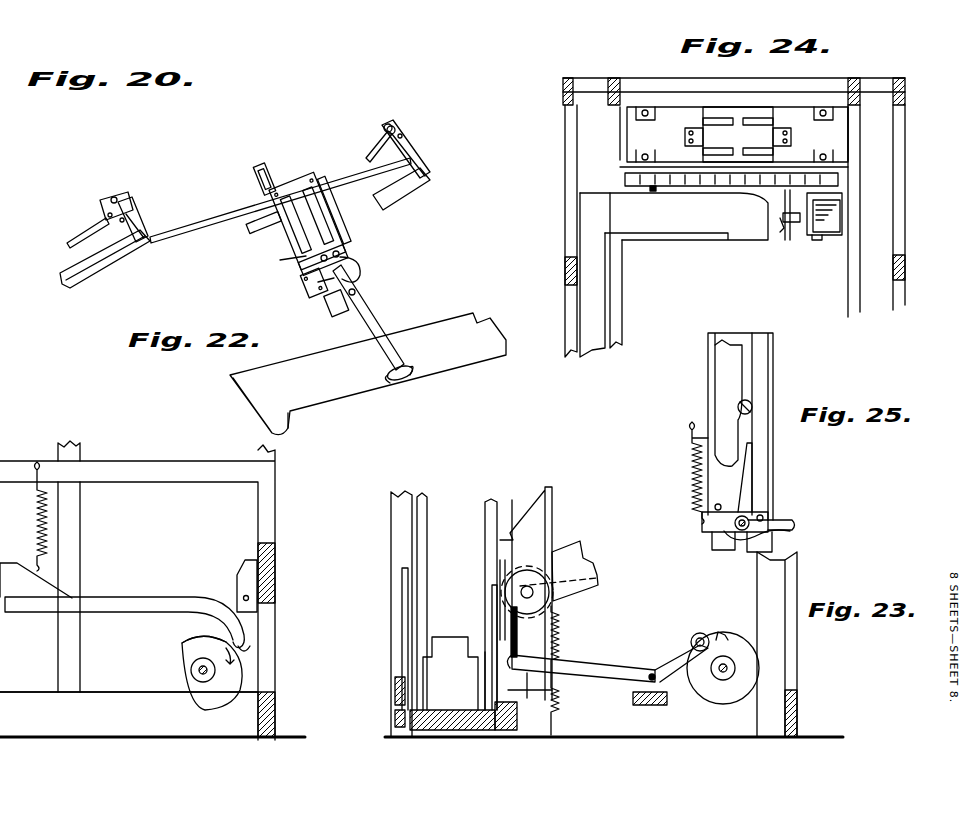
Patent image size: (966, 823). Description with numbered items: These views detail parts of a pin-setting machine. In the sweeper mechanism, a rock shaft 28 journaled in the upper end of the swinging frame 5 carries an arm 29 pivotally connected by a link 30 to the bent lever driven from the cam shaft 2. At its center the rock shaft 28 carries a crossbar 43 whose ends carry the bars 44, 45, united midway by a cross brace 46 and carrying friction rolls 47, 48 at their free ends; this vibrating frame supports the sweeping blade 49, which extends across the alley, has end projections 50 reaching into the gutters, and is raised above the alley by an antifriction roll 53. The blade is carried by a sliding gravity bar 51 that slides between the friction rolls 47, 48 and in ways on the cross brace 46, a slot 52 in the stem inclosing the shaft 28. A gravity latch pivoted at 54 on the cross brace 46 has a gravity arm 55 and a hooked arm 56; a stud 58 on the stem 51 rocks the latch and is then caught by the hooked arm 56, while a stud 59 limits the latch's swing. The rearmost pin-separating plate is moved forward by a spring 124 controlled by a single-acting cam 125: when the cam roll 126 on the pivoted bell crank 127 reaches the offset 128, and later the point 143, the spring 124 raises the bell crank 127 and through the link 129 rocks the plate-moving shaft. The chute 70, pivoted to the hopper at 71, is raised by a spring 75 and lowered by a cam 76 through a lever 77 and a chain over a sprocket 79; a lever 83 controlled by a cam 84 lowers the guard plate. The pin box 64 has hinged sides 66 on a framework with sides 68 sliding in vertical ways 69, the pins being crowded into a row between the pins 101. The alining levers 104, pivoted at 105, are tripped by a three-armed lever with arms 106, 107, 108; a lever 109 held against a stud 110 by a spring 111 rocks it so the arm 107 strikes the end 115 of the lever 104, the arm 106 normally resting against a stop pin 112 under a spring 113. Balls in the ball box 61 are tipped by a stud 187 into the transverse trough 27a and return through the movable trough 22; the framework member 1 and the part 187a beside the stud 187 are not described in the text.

In FIG. 22, the frame 1 is at (131, 470).
In FIG. 25, the frame 1 is at (708, 391).
In FIG. 22, the cam shaft 2 is at (196, 673).
In FIG. 20, the frame 5 is at (90, 278).
In FIG. 24, the movable trough 22 is at (600, 325).
In FIG. 24, the transverse trough 27a is at (750, 236).
In FIG. 20, the rock shaft 28 is at (195, 220).
In FIG. 20, the arm 29 is at (134, 214).
In FIG. 20, the link 30 is at (77, 238).
In FIG. 20, the crossbar 43 is at (293, 187).
In FIG. 20, the bar 44 is at (328, 210).
In FIG. 20, the bar 45 is at (268, 248).
In FIG. 20, the cross brace 46 is at (297, 272).
In FIG. 20, the friction roll 47 is at (362, 275).
In FIG. 20, the friction roll 48 is at (322, 298).
In FIG. 20, the sweeping blade 49 is at (328, 362).
In FIG. 20, the projections 50 is at (296, 425).
In FIG. 20, the sliding gravity bar 51 is at (388, 313).
In FIG. 20, the slot 52 is at (265, 172).
In FIG. 20, the antifriction roll 53 is at (414, 380).
In FIG. 20, the pivot 54 is at (300, 260).
In FIG. 20, the gravity arm 55 is at (340, 246).
In FIG. 20, the hooked arm 56 is at (322, 283).
In FIG. 20, the stud 58 is at (356, 294).
In FIG. 20, the stud 59 is at (346, 256).
In FIG. 24, the ball box 61 is at (834, 226).
In FIG. 24, the pin box 64 is at (738, 134).
In FIG. 24, the sides 66 is at (636, 120).
In FIG. 23, the sides 66 is at (441, 650).
In FIG. 24, the sides 68 is at (616, 154).
In FIG. 23, the sides 68 is at (482, 652).
In FIG. 23, the vertical ways 69 is at (420, 543).
In FIG. 23, the chute 70 is at (550, 519).
In FIG. 23, the pivot 71 is at (524, 590).
In FIG. 23, the spring 75 is at (557, 649).
In FIG. 23, the cam 76 is at (722, 634).
In FIG. 23, the lever 77 is at (528, 700).
In FIG. 23, the sprocket 79 is at (594, 565).
In FIG. 23, the lever 83 is at (594, 668).
In FIG. 23, the cam 84 is at (765, 652).
In FIG. 24, the pins 101 is at (645, 110).
In FIG. 25, the levers 104 is at (732, 364).
In FIG. 25, the pivot 105 is at (752, 405).
In FIG. 25, the arm 106 is at (706, 527).
In FIG. 25, the arm 107 is at (750, 470).
In FIG. 25, the arm 108 is at (778, 516).
In FIG. 25, the lever 109 is at (795, 528).
In FIG. 25, the stud 110 is at (766, 512).
In FIG. 25, the spring 111 is at (743, 546).
In FIG. 25, the stop pin 112 is at (714, 506).
In FIG. 25, the spring 113 is at (688, 468).
In FIG. 25, the end 115 is at (740, 446).
In FIG. 22, the spring 124 is at (46, 531).
In FIG. 22, the single acting cam 125 is at (238, 686).
In FIG. 22, the cam roll 126 is at (254, 648).
In FIG. 22, the bell crank 127 is at (139, 600).
In FIG. 22, the offset 128 is at (222, 636).
In FIG. 22, the link 129 is at (0, 386).
In FIG. 22, the point 143 is at (184, 643).
In FIG. 24, the stud 187 is at (793, 222).
In FIG. 24, the lug 187a is at (784, 228).